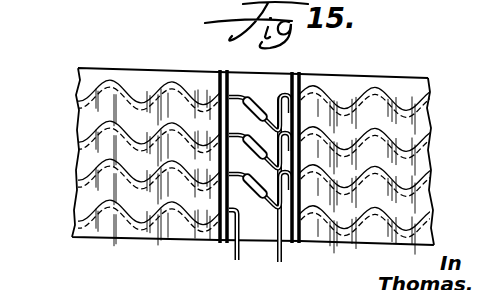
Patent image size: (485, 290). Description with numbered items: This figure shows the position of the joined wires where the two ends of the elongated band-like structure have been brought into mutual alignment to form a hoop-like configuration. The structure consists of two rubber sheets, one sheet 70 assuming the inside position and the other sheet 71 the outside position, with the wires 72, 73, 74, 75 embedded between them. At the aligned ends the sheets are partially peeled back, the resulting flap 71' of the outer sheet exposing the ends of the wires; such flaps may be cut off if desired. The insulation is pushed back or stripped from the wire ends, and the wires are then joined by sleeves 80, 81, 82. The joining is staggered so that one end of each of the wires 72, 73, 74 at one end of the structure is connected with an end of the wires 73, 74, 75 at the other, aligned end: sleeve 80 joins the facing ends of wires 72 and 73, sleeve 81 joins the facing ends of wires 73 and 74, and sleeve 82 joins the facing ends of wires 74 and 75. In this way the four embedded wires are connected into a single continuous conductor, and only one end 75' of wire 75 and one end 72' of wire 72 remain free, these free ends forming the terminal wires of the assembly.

The rubber sheet 70 is at (243, 70).
The rubber sheet 71 is at (253, 145).
The flap 71' is at (262, 141).
The wire 72 is at (252, 98).
The wire 73 is at (78, 133).
The wire 74 is at (78, 176).
The wire 75 is at (252, 218).
The free end of wire 72' is at (306, 186).
The free end of wire 75' is at (199, 243).
The sleeve 80 is at (253, 102).
The sleeve 81 is at (256, 156).
The sleeve 82 is at (258, 201).